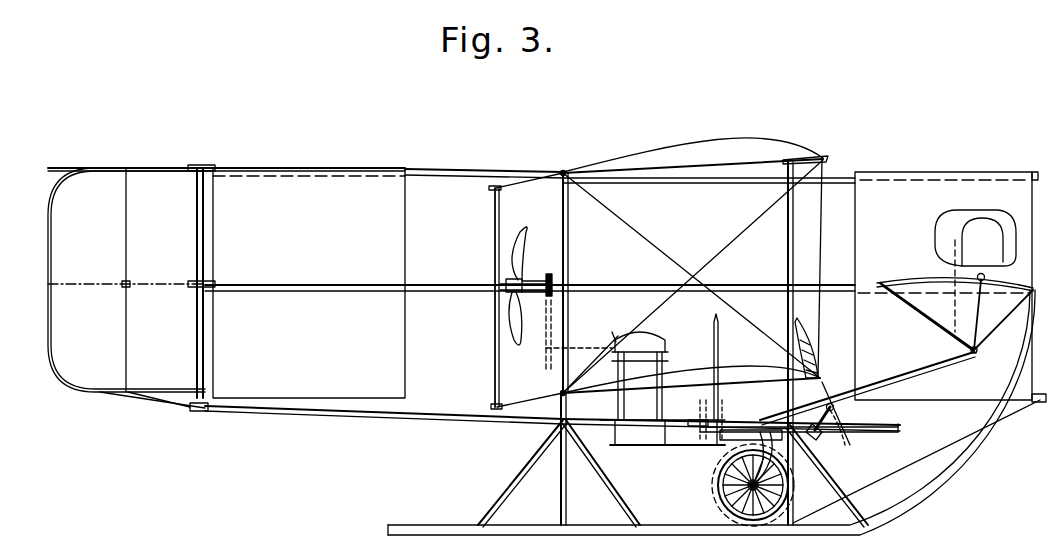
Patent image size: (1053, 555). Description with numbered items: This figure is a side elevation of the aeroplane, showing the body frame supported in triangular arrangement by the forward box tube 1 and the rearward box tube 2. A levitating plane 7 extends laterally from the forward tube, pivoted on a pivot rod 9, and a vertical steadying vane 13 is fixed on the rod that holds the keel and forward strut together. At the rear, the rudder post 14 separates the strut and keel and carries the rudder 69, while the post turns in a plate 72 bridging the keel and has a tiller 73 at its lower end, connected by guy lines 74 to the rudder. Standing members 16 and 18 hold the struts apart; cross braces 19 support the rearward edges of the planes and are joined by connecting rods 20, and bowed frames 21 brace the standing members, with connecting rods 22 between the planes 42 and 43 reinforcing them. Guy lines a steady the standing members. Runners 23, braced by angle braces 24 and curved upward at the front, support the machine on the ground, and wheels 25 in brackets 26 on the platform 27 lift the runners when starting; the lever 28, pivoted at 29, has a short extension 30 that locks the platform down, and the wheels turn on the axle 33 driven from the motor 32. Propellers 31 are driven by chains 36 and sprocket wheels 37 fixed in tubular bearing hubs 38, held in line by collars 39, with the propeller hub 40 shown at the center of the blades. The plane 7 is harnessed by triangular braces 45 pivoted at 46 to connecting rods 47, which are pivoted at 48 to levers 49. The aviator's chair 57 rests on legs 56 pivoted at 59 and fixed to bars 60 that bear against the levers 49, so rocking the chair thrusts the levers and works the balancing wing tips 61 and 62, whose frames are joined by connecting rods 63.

The box tube 1 is at (1028, 213).
The box tube 2 is at (324, 180).
The levitating plane 7 is at (906, 283).
The pivot rod 9 is at (978, 281).
The vertical steadying vane 13 is at (985, 238).
The rudder post 14 is at (204, 184).
The standing member 16 is at (561, 486).
The standing member 18 is at (783, 456).
The cross brace 19 is at (564, 171).
The connecting rod 20 is at (570, 240).
The bowed frame 21 is at (826, 159).
The connecting rod 22 is at (820, 250).
The runner 23 is at (815, 342).
The angle brace 24 is at (522, 482).
The wheel 25 is at (713, 494).
The bracket 26 is at (759, 486).
The platform 27 is at (890, 432).
The lever 28 is at (832, 413).
The lever pivot 29 is at (833, 412).
The short extension 30 is at (820, 435).
The propeller 31 is at (524, 246).
The motor 32 is at (584, 356).
The axle 33 is at (721, 472).
The chain 36 is at (546, 342).
The sprocket wheel 37 is at (553, 283).
The tubular bearing hub 38 is at (533, 284).
The collar 39 is at (506, 291).
The propeller hub 40 is at (506, 277).
The plane 42 is at (672, 157).
The plane 43 is at (690, 375).
The brace 45 is at (918, 308).
The pivotal connection 46 is at (974, 355).
The connecting rod 47 is at (914, 372).
The pivotal connection 48 is at (720, 420).
The lever 49 is at (719, 358).
The leg 56 is at (612, 423).
The aviator's chair 57 is at (645, 346).
The pivotal connection 59 is at (622, 494).
The bar 60 is at (668, 442).
The balancing wing tip 61 is at (512, 187).
The balancing wing tip 62 is at (546, 398).
The connecting rod 63 is at (494, 238).
The rudder 69 is at (60, 344).
The plate 72 is at (195, 405).
The tiller 73 is at (197, 412).
The guy line 74 is at (152, 399).
The guy line a is at (633, 229).